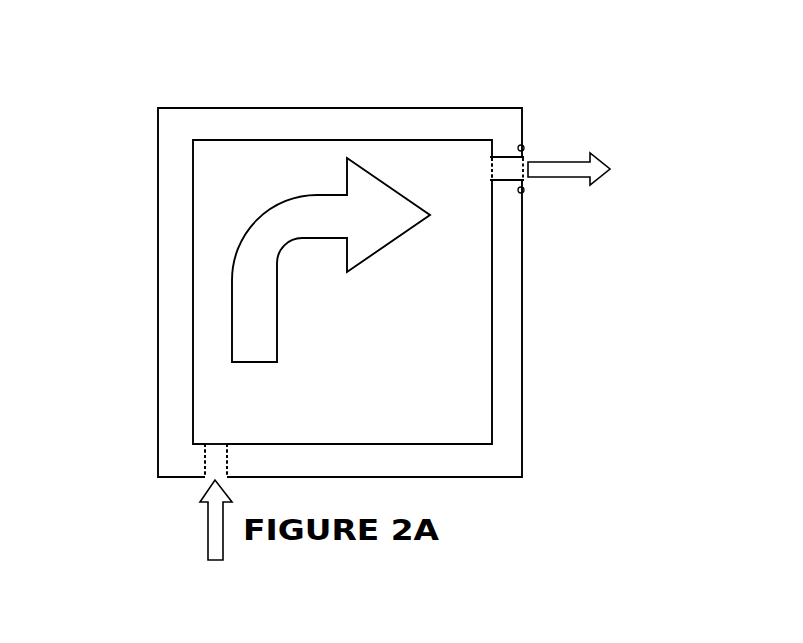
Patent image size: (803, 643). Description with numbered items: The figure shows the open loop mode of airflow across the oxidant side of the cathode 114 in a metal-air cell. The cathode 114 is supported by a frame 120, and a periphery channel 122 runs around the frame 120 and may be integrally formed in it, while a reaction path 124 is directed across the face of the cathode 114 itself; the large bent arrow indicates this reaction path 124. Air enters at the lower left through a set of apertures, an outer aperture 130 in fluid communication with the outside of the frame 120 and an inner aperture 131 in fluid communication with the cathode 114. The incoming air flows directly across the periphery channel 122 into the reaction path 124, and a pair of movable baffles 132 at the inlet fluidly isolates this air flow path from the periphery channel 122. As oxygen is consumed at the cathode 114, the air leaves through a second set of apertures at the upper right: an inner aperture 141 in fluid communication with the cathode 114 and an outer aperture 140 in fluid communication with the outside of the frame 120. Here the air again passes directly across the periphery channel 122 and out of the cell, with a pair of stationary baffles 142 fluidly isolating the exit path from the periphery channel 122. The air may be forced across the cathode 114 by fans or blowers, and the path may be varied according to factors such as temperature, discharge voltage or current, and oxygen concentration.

The cathode 114 is at (423, 413).
The frame 120 is at (160, 330).
The periphery channel 122 is at (172, 183).
The reaction path 124 is at (268, 213).
The outer aperture 130 is at (213, 481).
The inner aperture 131 is at (222, 442).
The movable baffles 132 is at (204, 450).
The outer aperture 140 is at (524, 146).
The inner aperture 141 is at (488, 173).
The stationary baffles 142 is at (503, 156).